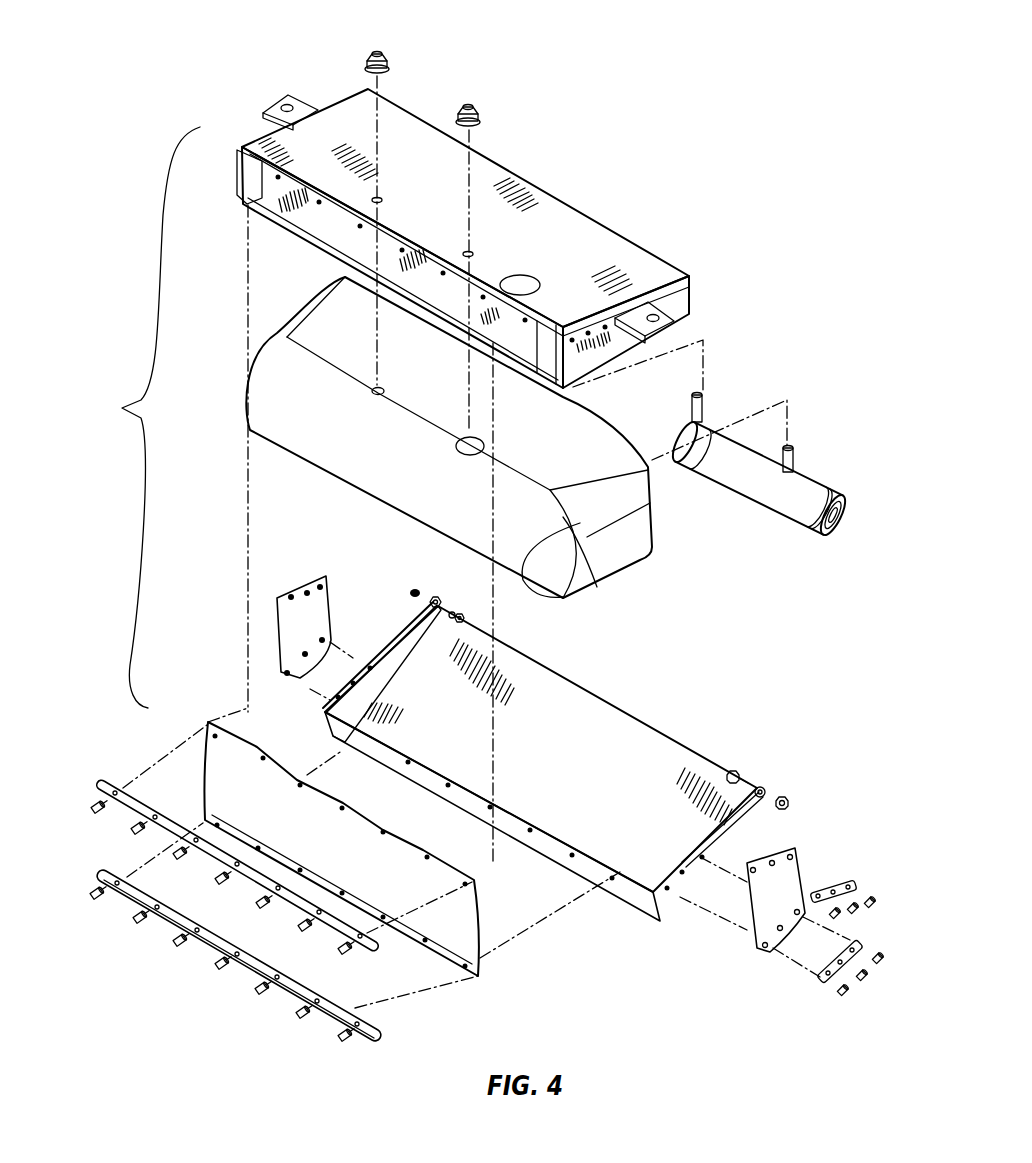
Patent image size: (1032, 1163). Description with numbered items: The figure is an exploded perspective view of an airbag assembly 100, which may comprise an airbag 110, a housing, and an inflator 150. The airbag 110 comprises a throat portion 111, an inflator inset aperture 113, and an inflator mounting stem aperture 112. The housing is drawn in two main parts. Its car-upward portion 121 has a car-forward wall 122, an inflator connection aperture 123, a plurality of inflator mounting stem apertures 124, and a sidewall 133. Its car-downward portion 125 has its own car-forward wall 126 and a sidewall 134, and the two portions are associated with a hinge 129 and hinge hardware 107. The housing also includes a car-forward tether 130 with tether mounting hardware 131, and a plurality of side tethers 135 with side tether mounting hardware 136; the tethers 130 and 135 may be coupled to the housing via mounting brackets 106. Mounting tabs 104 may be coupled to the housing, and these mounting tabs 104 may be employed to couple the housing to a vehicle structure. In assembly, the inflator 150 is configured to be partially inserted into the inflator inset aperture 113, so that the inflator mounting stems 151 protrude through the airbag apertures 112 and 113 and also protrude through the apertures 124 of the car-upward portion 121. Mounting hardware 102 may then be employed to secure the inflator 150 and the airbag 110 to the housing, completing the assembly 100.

The airbag assembly 100 is at (142, 417).
The mounting hardware 102 is at (375, 52).
The mounting tabs 104 is at (303, 107).
The mounting brackets 106 is at (380, 937).
The hinge hardware 107 is at (735, 772).
The airbag 110 is at (640, 573).
The throat portion 111 is at (597, 587).
The inflator mounting stem aperture 112 is at (377, 387).
The inflator inset aperture 113 is at (460, 446).
The car-upward portion 121 is at (550, 254).
The car-forward wall 122 is at (418, 304).
The inflator connection aperture 123 is at (520, 285).
The inflator mounting stem apertures 124 is at (382, 201).
The car-downward portion 125 is at (642, 758).
The car-forward wall 126 is at (597, 875).
The hinge 129 is at (762, 788).
The car-forward tether 130 is at (480, 957).
The tether mounting hardware 131 is at (260, 993).
The sidewall 133 is at (640, 353).
The sidewall 134 is at (400, 643).
The side tethers 135 is at (314, 611).
The side tether mounting hardware 136 is at (307, 590).
The inflator 150 is at (738, 498).
The inflator mounting stems 151 is at (797, 457).